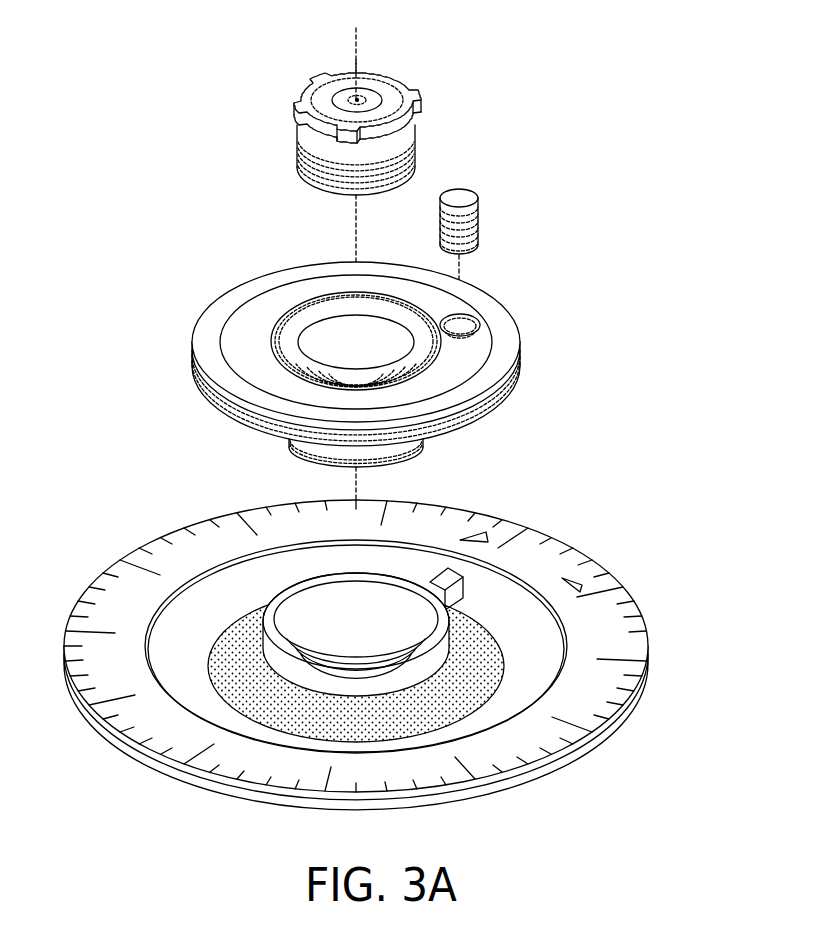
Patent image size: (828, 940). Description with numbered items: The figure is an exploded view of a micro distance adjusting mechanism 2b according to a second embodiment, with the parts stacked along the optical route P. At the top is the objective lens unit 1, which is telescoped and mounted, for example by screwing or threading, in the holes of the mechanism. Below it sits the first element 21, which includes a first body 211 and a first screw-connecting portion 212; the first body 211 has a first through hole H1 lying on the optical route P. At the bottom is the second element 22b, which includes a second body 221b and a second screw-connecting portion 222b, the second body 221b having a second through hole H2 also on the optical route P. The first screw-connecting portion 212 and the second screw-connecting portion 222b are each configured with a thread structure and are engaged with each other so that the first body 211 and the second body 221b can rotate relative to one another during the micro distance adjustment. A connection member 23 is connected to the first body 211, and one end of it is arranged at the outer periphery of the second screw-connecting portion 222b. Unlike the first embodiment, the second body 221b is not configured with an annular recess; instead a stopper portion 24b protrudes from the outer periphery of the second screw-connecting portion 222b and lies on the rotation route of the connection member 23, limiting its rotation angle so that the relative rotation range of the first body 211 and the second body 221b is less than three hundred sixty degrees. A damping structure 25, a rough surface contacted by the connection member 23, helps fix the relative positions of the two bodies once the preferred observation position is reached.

The objective lens unit 1 is at (402, 78).
The optical route P is at (357, 320).
The micro distance adjusting mechanism 2b is at (748, 182).
The connection member 23 is at (470, 197).
The first element 21 is at (407, 357).
The first body 211 is at (518, 368).
The first screw-connecting portion 212 is at (405, 450).
The first through hole H1 is at (330, 352).
The second element 22b is at (404, 642).
The second body 221b is at (643, 672).
The second screw-connecting portion 222b is at (387, 617).
The stopper portion 24b is at (448, 577).
The damping structure 25 is at (477, 655).
The second through hole H2 is at (300, 620).